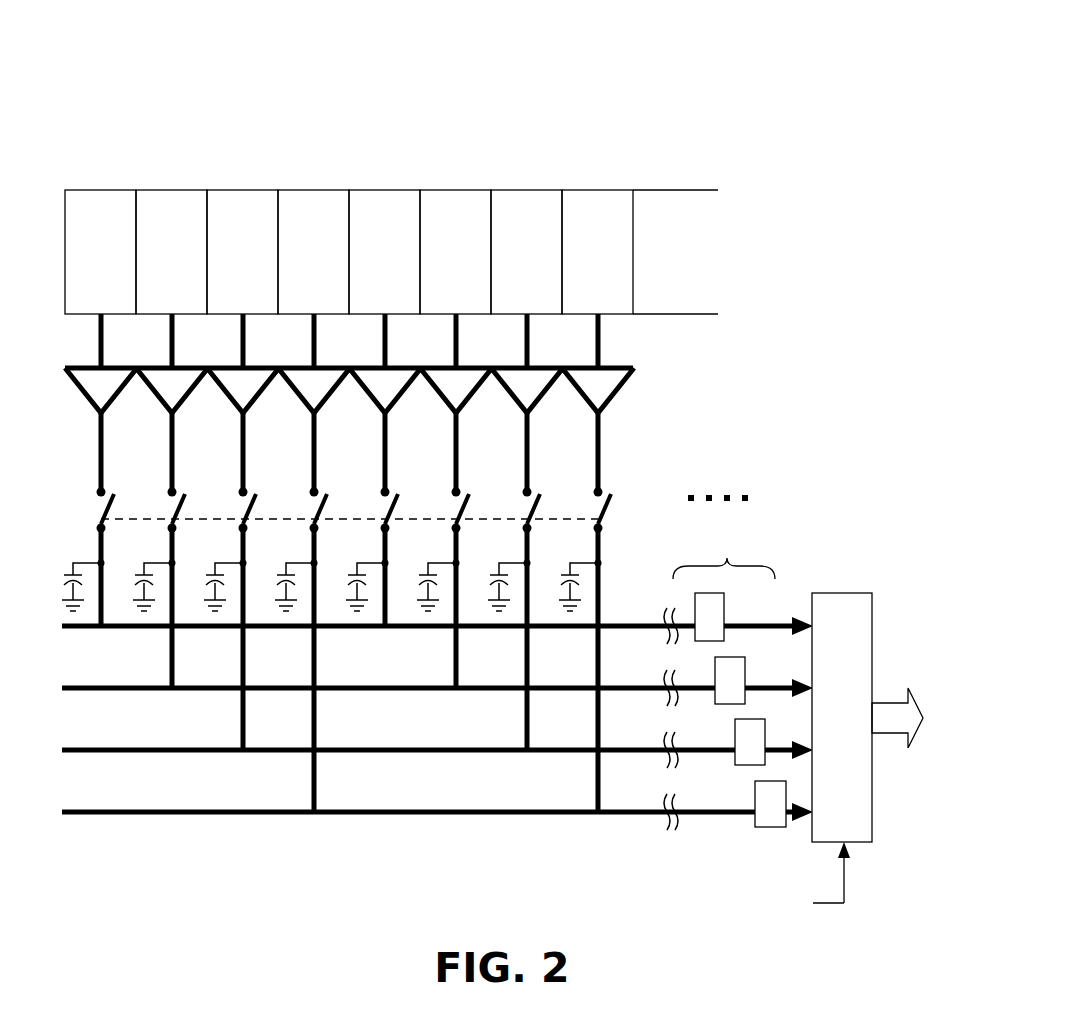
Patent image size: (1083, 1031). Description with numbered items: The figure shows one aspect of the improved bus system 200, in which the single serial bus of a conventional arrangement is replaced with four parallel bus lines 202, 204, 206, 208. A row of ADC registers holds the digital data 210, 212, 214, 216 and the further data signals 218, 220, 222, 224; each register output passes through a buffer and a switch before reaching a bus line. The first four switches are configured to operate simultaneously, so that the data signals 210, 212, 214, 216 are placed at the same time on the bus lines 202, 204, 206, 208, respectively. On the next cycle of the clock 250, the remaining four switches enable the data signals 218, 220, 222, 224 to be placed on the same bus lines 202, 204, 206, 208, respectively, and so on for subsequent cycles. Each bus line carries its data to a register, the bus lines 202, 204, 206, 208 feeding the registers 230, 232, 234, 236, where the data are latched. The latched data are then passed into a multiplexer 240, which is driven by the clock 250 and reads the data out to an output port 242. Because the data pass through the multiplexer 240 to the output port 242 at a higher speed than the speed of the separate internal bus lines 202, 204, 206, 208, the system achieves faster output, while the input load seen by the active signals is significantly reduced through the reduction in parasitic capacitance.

The improved bus system 200 is at (728, 54).
The parallel bus line 202 is at (140, 630).
The parallel bus line 204 is at (140, 692).
The parallel bus line 206 is at (140, 754).
The parallel bus line 208 is at (140, 816).
The digital data 210 is at (100, 252).
The digital data 212 is at (171, 252).
The digital data 214 is at (242, 252).
The digital data 216 is at (313, 252).
The data signal 218 is at (384, 252).
The data signal 220 is at (455, 252).
The data signal 222 is at (526, 252).
The data signal 224 is at (597, 252).
The register 230 is at (734, 611).
The register 232 is at (753, 674).
The register 234 is at (770, 736).
The register 236 is at (751, 813).
The multiplexer 240 is at (830, 592).
The output port 242 is at (878, 696).
The clock 250 is at (820, 906).